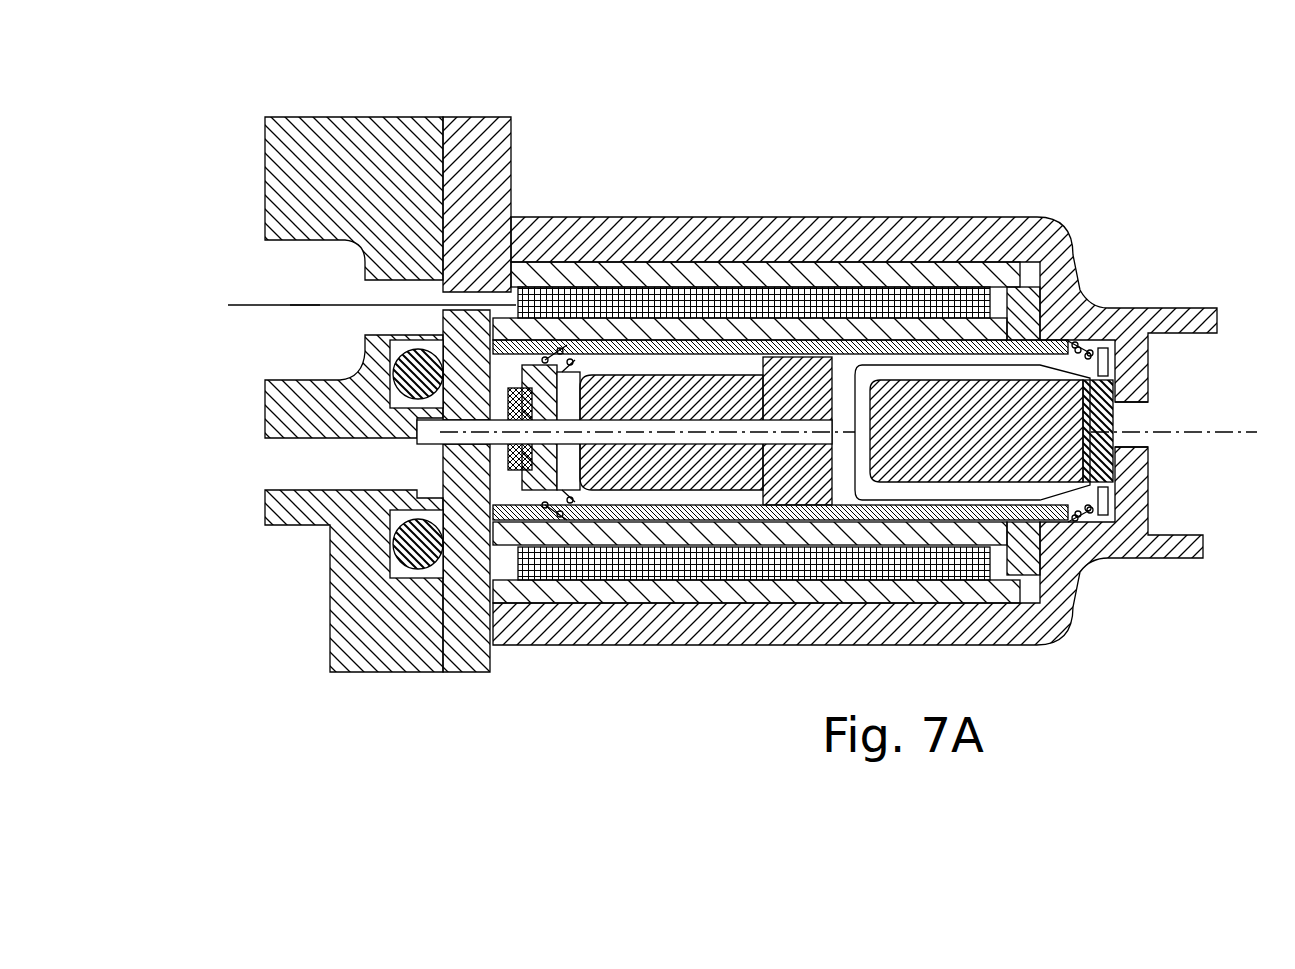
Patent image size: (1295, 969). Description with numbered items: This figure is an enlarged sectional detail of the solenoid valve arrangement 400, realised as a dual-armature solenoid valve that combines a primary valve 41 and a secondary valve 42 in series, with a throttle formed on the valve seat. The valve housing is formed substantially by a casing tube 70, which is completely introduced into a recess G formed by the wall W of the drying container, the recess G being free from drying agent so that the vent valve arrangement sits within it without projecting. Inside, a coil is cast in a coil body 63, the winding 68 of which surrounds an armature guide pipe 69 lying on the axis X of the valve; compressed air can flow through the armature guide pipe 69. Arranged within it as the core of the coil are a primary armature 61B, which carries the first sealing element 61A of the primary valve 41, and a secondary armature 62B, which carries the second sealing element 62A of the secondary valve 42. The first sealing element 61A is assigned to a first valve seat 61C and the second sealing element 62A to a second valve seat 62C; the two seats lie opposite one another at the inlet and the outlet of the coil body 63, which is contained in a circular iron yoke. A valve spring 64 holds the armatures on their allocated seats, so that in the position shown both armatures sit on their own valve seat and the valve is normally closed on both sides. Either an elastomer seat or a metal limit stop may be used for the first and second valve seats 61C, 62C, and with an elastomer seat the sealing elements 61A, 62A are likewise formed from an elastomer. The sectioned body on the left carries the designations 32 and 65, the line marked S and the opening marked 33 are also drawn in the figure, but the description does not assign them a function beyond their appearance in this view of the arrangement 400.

The solenoid valve arrangement 400 is at (829, 130).
The primary valve 41 is at (1067, 190).
The secondary valve 42 is at (535, 147).
The wall W is at (468, 180).
The mounting body 32 is at (412, 458).
The second valve seat 62C is at (395, 382).
The signal line S is at (368, 290).
The channel 65 is at (307, 305).
The armature guide pipe 69 is at (949, 275).
The recess G is at (845, 262).
The winding 68 is at (615, 330).
The casing tube 70 is at (703, 600).
The second sealing element 62A is at (546, 368).
The coil body 63 is at (521, 390).
The secondary armature 62B is at (685, 392).
The shaft opening 33 is at (1135, 424).
The axis X is at (1200, 432).
The primary armature 61B is at (1096, 345).
The first sealing element 61A is at (1113, 457).
The first valve seat 61C is at (1118, 395).
The valve spring 64 is at (1092, 522).